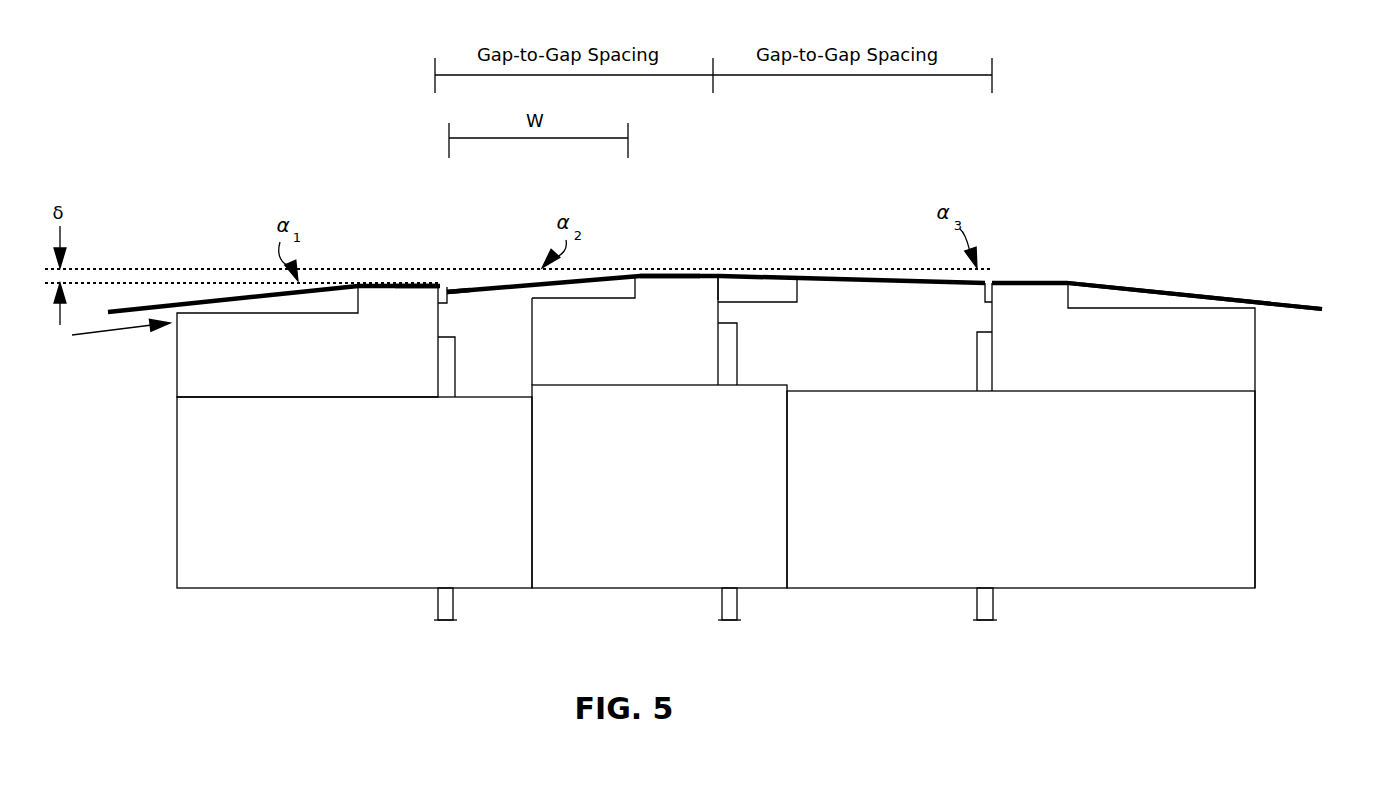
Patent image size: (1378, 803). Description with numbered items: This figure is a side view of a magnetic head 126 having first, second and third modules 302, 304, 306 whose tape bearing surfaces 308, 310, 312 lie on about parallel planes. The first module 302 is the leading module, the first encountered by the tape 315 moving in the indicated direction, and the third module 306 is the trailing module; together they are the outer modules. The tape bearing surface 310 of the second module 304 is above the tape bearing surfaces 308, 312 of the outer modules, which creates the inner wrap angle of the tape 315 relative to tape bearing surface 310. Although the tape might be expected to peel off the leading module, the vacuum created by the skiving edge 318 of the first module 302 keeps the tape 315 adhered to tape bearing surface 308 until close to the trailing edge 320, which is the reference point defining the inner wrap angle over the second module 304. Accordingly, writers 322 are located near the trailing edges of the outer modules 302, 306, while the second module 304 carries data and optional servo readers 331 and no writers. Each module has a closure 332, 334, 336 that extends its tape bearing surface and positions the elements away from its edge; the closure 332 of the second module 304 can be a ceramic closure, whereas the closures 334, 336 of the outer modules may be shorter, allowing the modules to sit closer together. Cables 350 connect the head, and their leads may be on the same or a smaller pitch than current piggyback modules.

The magnetic head 126 is at (338, 145).
The first module 302 is at (177, 361).
The second module 304 is at (608, 298).
The third module 306 is at (1255, 357).
The tape bearing surface 308 is at (406, 264).
The tape bearing surface 310 is at (663, 252).
The tape bearing surface 312 is at (1030, 262).
The tape 315 is at (1122, 285).
The skiving edge 318 is at (335, 302).
The trailing edge 320 is at (470, 290).
The writers 322 is at (442, 262).
The readers 331 is at (720, 252).
The closure 332 is at (763, 302).
The closure 334 is at (447, 303).
The closure 336 is at (985, 295).
The cables 350 is at (453, 600).